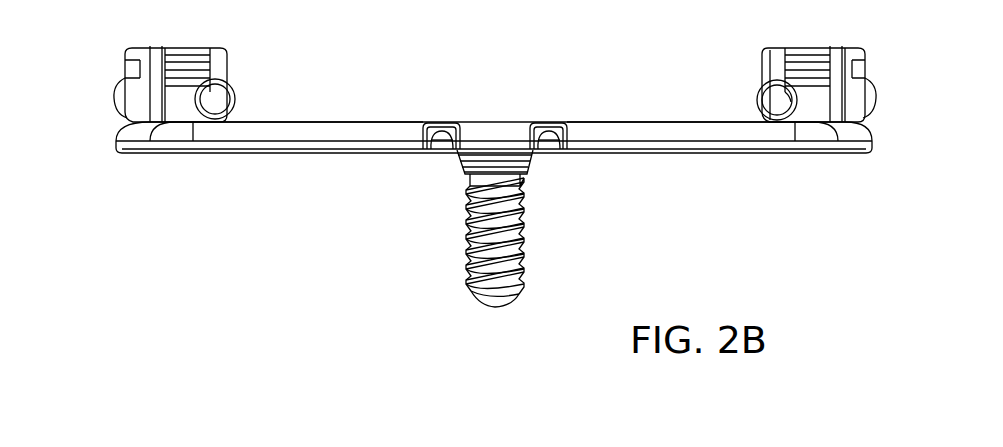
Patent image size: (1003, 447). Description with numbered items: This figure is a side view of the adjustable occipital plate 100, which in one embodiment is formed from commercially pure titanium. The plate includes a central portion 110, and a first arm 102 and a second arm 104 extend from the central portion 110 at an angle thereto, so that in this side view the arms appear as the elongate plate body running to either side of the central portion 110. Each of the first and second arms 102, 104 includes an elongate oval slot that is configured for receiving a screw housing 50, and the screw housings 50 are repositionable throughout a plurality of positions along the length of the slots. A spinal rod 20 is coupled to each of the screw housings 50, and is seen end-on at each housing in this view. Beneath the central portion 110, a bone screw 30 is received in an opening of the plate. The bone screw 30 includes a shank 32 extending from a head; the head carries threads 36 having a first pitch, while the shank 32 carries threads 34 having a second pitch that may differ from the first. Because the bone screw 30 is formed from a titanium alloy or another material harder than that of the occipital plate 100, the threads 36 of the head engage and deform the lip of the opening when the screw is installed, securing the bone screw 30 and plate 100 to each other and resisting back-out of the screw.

The adjustable occipital plate 100 is at (309, 181).
The first arm 102 is at (273, 132).
The second arm 104 is at (627, 132).
The central portion 110 is at (492, 133).
The spinal rod 20 is at (782, 106).
The bone screw 30 is at (509, 228).
The shank 32 is at (472, 266).
The threads 34 is at (538, 223).
The threads 36 is at (462, 166).
The screw housing 50 is at (880, 63).